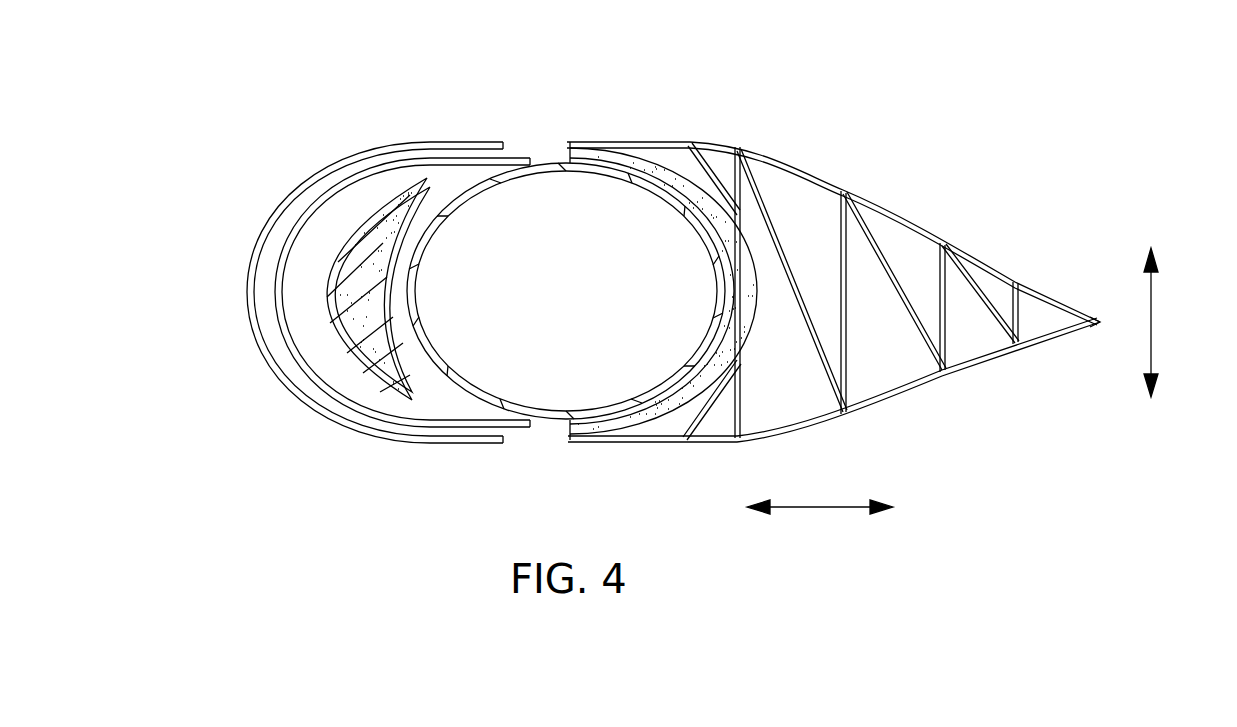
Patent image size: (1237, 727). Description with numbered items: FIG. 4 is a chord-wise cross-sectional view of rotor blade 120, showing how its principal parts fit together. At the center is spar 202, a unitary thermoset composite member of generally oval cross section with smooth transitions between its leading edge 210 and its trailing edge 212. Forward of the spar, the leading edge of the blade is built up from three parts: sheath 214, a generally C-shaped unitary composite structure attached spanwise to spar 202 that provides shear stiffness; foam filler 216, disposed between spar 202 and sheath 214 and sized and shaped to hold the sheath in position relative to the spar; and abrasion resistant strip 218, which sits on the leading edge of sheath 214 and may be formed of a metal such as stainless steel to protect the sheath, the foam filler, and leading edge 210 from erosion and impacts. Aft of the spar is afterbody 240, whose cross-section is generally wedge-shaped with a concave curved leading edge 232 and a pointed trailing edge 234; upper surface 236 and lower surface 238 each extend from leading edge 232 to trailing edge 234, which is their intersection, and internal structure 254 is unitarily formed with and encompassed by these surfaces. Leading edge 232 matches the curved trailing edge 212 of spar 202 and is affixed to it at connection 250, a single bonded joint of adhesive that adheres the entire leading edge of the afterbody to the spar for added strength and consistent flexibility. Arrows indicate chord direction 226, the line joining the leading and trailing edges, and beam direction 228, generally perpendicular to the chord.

The rotor blade 120 is at (980, 92).
The spar 202 is at (553, 420).
The leading edge 210 is at (424, 234).
The trailing edge 212 is at (725, 255).
The sheath 214 is at (292, 372).
The foam filler 216 is at (362, 376).
The abrasion resistant strip 218 is at (256, 338).
The chord direction 226 is at (820, 510).
The beam direction 228 is at (1155, 320).
The leading edge 232 is at (748, 290).
The trailing edge 234 is at (1100, 322).
The upper surface 236 is at (890, 204).
The lower surface 238 is at (910, 388).
The afterbody 240 is at (990, 248).
The connection 250 is at (652, 413).
The internal structure 254 is at (947, 333).